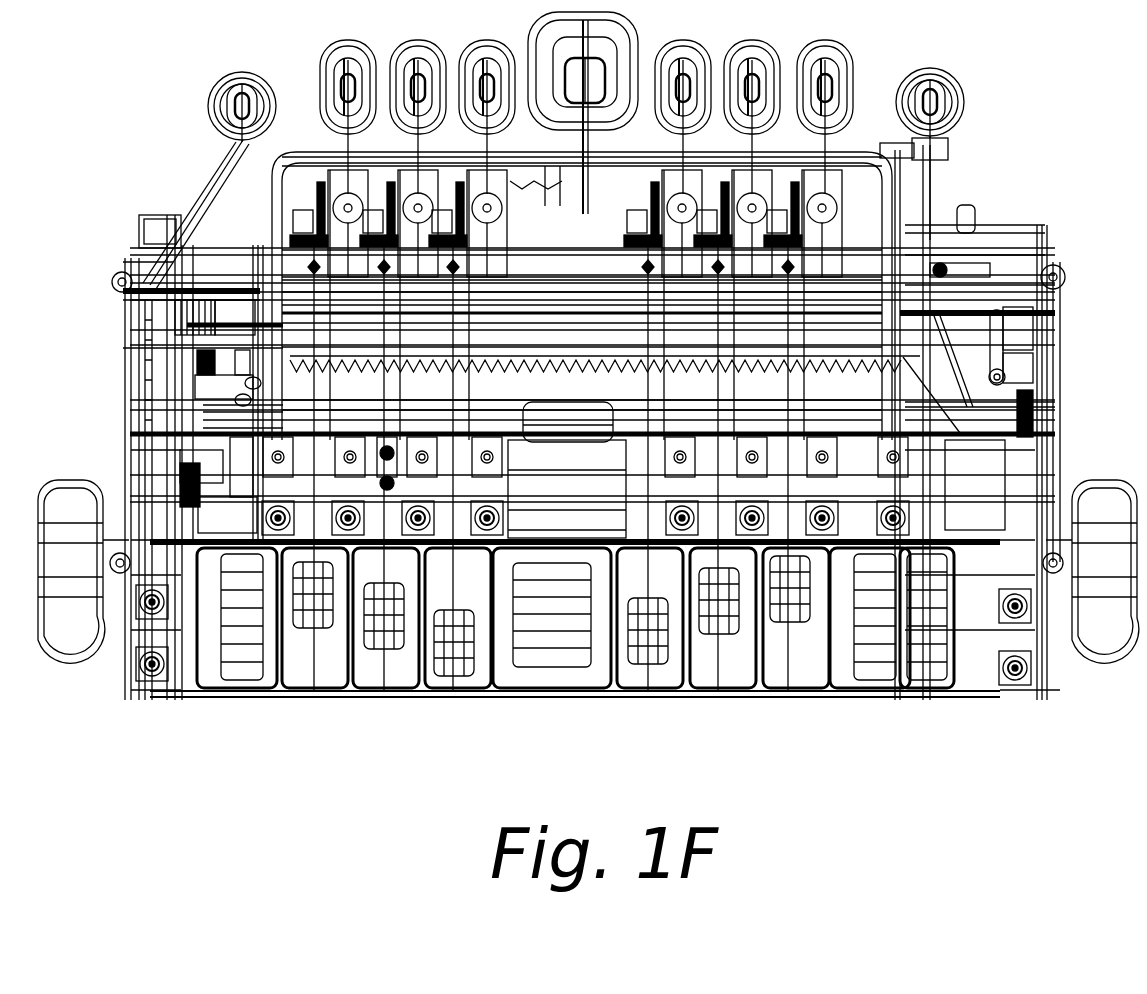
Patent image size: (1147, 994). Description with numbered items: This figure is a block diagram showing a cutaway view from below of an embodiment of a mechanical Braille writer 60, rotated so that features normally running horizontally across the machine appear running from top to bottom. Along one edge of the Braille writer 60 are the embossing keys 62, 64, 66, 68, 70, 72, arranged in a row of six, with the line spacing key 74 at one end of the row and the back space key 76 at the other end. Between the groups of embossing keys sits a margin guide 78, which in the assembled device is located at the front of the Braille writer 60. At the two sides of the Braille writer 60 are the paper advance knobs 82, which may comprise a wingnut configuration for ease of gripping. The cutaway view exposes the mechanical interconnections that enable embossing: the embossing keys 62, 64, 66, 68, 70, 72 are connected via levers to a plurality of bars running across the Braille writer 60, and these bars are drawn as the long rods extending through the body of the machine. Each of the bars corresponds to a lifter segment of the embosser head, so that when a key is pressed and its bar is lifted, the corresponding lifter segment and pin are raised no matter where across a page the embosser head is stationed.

The mechanical Braille writer 60 is at (672, 697).
The embossing key 62 is at (348, 42).
The embossing key 64 is at (418, 42).
The embossing key 66 is at (487, 42).
The embossing key 68 is at (683, 40).
The embossing key 70 is at (752, 42).
The embossing key 72 is at (825, 40).
The line spacing key 74 is at (242, 72).
The back space key 76 is at (930, 68).
The margin guide 78 is at (583, 20).
The paper advance knob 82 is at (65, 490).